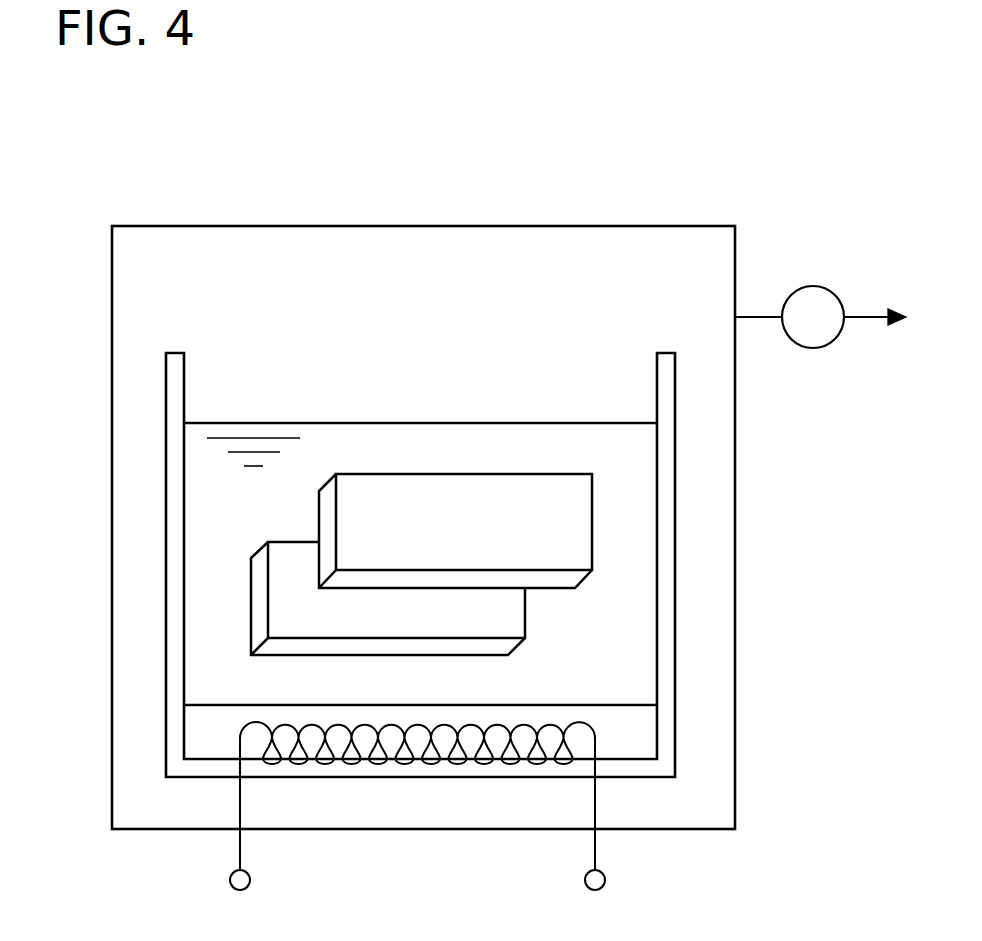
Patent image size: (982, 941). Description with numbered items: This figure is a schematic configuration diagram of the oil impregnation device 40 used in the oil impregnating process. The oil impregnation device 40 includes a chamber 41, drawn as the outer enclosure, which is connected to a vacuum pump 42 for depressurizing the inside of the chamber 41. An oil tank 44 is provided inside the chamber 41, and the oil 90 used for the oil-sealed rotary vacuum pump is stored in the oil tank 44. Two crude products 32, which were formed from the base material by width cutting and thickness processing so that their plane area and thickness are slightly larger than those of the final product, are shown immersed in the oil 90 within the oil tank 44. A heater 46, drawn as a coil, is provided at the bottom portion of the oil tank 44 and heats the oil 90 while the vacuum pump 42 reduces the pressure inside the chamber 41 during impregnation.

The oil impregnation device 40 is at (710, 150).
The chamber 41 is at (316, 226).
The vacuum pump 42 is at (816, 285).
The oil tank 44 is at (166, 392).
The heater 46 is at (417, 747).
The oil 90 is at (633, 512).
The crude product 32 is at (453, 474).